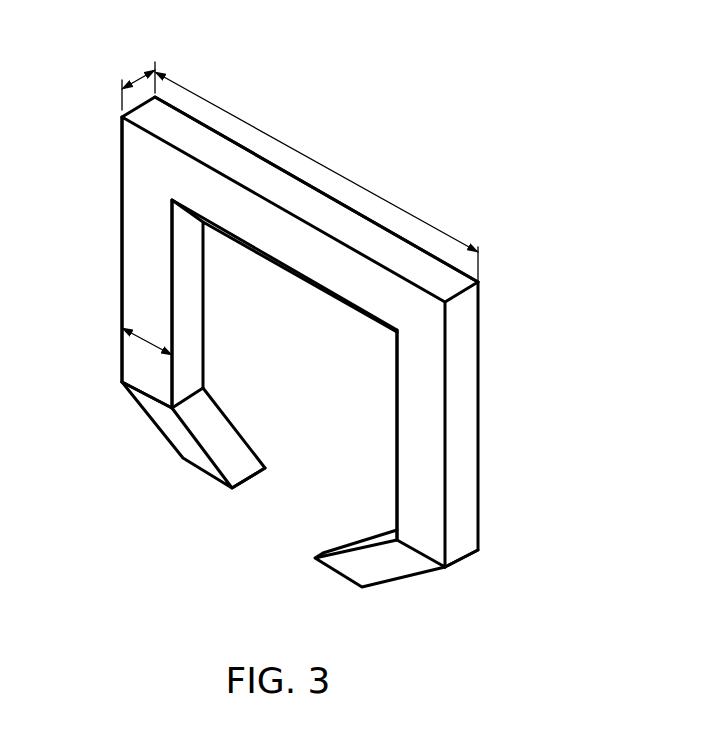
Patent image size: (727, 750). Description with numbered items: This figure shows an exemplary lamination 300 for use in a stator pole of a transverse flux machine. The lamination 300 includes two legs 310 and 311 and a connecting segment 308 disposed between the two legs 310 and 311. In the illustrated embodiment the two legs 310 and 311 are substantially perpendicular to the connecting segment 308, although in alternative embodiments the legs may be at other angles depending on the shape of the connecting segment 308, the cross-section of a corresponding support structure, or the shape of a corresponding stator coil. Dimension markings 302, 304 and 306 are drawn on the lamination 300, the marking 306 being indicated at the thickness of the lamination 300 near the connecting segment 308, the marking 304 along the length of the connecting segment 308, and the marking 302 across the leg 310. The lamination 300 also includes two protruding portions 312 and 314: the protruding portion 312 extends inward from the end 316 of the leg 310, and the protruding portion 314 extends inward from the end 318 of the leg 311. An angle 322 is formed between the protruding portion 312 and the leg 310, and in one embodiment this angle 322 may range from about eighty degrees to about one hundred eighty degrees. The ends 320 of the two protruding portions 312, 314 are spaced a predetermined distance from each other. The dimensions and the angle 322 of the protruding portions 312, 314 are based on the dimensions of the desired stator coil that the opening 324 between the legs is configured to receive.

The lamination 300 is at (532, 113).
The leg width 302 is at (143, 342).
The top cross member length 304 is at (317, 162).
The frame thickness 306 is at (138, 78).
The connecting segment 308 is at (367, 230).
The leg 310 is at (132, 267).
The leg 311 is at (467, 423).
The protruding portion 312 is at (177, 435).
The protruding portion 314 is at (372, 562).
The end of the leg 316 is at (122, 382).
The end of the leg 318 is at (462, 557).
The ends of the protruding portions 320 is at (255, 482).
The angle 322 is at (205, 386).
The opening 324 is at (372, 442).